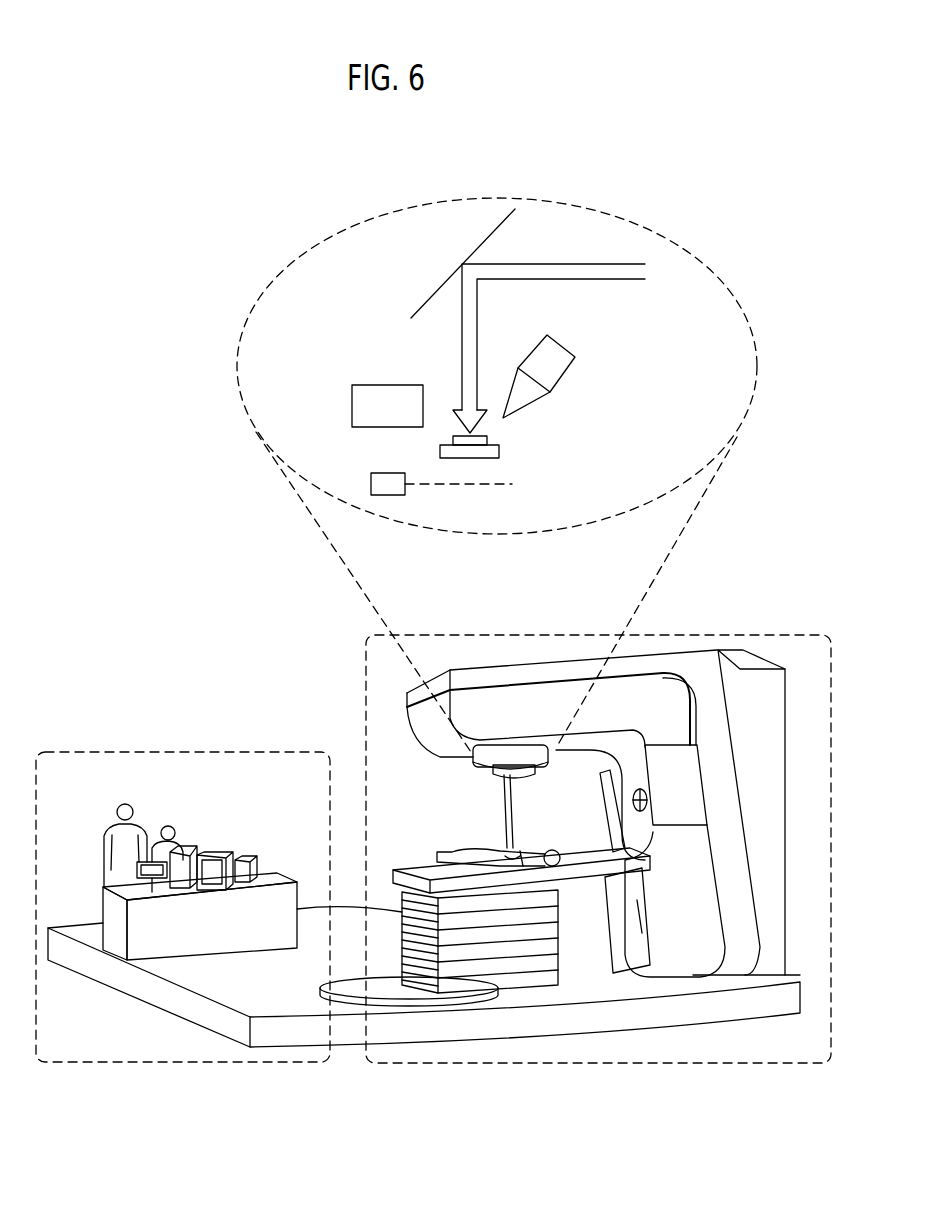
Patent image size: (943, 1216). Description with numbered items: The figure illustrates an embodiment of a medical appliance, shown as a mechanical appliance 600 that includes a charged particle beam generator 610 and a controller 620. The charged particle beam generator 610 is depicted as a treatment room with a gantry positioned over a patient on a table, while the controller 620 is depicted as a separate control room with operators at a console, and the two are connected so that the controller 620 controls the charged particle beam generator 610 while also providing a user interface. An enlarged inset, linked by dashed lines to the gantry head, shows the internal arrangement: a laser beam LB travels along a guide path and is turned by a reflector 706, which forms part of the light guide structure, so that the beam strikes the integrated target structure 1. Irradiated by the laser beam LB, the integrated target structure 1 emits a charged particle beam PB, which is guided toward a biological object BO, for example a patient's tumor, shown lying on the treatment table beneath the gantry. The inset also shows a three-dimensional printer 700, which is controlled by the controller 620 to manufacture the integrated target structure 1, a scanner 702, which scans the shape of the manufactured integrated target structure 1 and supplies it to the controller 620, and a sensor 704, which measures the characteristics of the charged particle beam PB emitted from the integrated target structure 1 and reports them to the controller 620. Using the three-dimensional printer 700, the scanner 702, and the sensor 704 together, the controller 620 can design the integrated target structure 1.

The reflector 706 is at (490, 225).
The laser beam LB is at (618, 263).
The scanner 702 is at (355, 384).
The 3D printer 700 is at (576, 376).
The integrated target structure 1 is at (500, 455).
The sensor 704 is at (371, 475).
The mechanical appliance 600 is at (339, 675).
The charged particle beam generator 610 is at (366, 690).
The controller 620 is at (256, 750).
The charged particle beam PB is at (504, 815).
The biological object BO is at (527, 852).